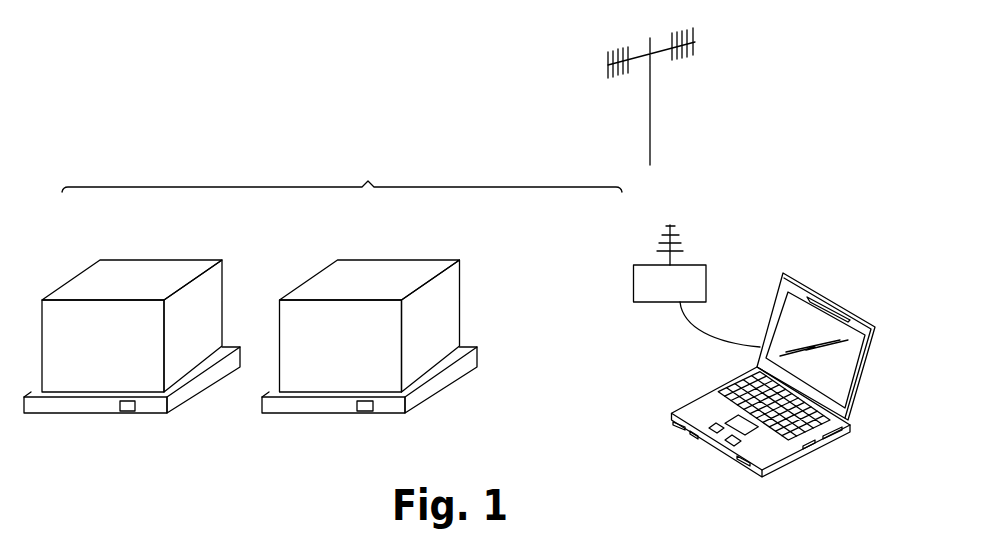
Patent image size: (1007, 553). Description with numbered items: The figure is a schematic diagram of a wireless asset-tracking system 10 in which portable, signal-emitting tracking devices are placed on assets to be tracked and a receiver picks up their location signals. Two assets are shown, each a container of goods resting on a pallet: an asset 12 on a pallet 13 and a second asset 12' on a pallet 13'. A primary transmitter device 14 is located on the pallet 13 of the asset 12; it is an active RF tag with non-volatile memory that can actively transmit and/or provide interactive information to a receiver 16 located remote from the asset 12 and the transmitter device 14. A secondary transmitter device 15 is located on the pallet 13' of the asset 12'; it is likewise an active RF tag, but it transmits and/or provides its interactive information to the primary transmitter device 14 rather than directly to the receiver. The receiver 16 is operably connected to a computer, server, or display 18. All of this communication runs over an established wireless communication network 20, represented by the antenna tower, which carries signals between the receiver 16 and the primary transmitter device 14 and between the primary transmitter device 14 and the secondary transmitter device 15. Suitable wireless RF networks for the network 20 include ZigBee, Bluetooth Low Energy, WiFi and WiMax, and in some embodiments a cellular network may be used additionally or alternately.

The tracking system 10 is at (342, 176).
The asset 12 is at (370, 304).
The asset 12' is at (132, 304).
The pallet 13 is at (382, 380).
The pallet 13' is at (132, 405).
The primary transmitter device 14 is at (365, 412).
The secondary transmitter device 15 is at (130, 412).
The receiver 16 is at (695, 272).
The computer, server, or display 18 is at (833, 300).
The wireless communication network 20 is at (691, 79).